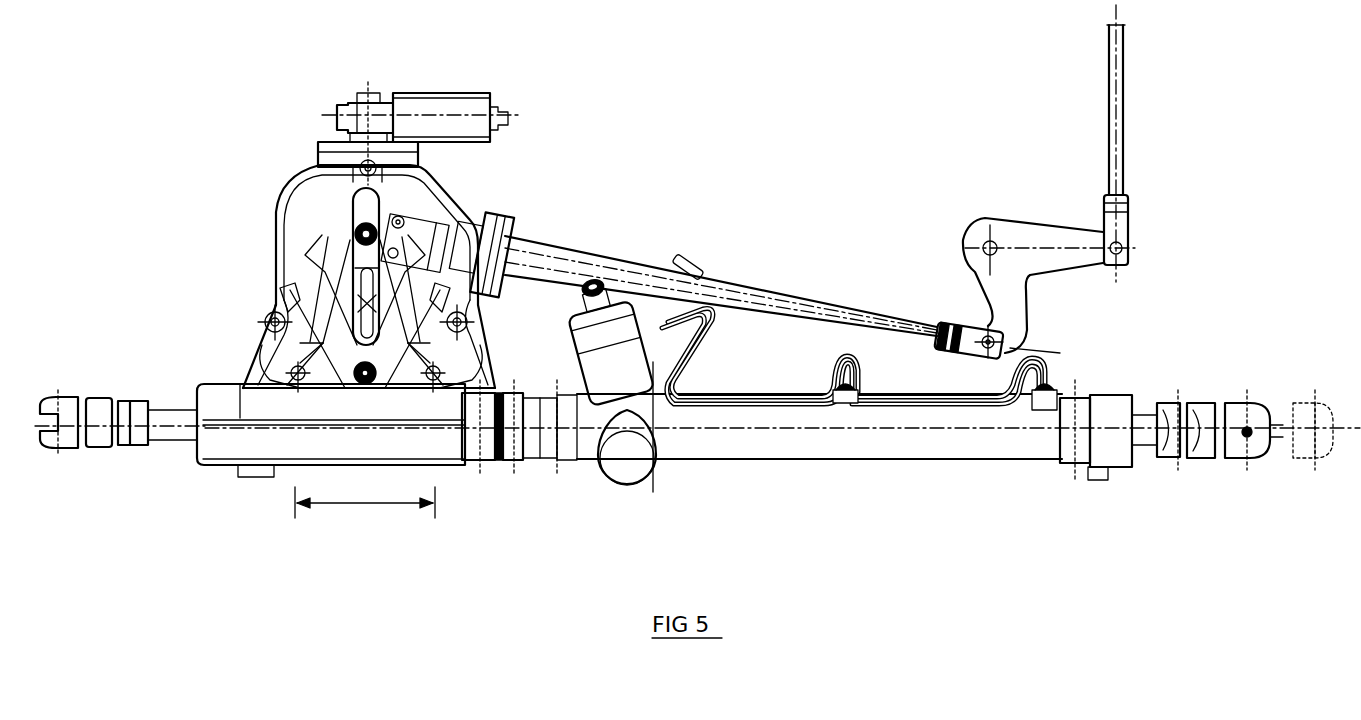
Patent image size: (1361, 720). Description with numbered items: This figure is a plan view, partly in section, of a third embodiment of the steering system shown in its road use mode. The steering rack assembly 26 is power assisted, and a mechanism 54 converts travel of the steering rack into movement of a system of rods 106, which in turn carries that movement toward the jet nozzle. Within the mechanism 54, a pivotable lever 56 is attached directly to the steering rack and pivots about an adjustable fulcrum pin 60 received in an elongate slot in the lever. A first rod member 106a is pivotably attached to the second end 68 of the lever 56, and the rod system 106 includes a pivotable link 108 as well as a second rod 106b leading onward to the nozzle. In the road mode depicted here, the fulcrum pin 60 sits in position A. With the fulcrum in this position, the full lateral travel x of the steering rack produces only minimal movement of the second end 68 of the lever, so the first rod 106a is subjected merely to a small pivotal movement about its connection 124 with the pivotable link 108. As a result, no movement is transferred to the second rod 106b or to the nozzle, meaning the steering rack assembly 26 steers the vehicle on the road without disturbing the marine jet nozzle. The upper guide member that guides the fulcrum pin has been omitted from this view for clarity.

The steering rack assembly 26 is at (847, 443).
The mechanism 54 is at (222, 160).
The pivotable lever 56 is at (318, 358).
The fulcrum pin 60 is at (350, 225).
The second end of the lever 68 is at (337, 190).
The system of rods 106 is at (920, 160).
The first rod member 106a is at (765, 280).
The second rod 106b is at (1123, 83).
The pivotable link 108 is at (1037, 248).
The connection 124 is at (1010, 345).
The position A is at (352, 233).
The lateral travel x is at (365, 508).